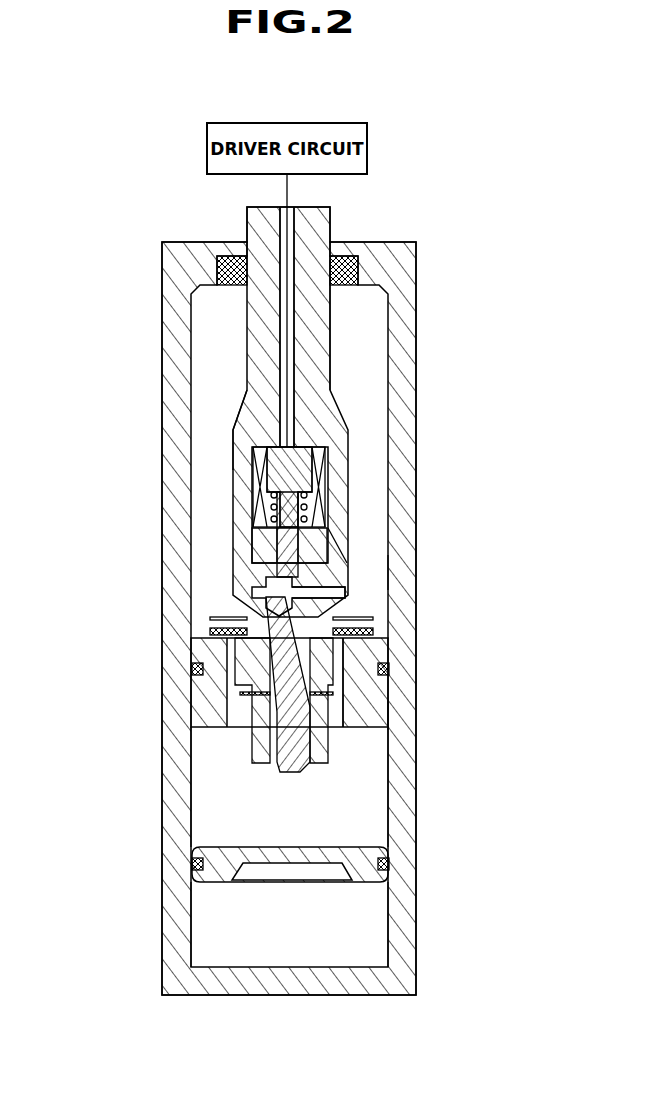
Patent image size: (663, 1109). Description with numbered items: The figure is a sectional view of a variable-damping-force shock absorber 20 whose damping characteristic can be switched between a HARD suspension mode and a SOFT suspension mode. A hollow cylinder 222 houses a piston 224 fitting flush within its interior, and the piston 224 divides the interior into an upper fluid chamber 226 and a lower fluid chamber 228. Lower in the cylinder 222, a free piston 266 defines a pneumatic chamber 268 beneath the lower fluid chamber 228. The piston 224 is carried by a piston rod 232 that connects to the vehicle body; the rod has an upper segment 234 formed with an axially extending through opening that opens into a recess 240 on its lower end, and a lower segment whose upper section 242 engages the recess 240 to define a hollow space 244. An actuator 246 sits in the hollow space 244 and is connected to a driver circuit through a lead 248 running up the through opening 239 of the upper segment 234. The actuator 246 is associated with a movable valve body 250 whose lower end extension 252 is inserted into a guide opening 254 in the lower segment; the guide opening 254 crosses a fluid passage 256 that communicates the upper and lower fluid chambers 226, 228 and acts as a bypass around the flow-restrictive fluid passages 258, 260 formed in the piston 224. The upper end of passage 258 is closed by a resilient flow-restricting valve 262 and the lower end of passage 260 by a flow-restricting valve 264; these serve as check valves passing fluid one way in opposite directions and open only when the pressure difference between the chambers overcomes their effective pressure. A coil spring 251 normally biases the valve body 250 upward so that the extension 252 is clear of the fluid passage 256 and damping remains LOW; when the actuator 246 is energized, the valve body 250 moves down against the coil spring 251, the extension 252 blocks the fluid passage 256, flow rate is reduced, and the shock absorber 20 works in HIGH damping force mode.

The shock absorber 20 is at (425, 525).
The housing 222 is at (410, 833).
The piston 224 is at (378, 716).
The upper fluid chamber 226 is at (377, 570).
The lower fluid chamber 228 is at (373, 792).
The piston rod 232 is at (357, 402).
The upper segment 234 is at (327, 363).
The lead wire 239 is at (285, 322).
The recess 240 is at (330, 552).
The upper section 242 is at (347, 578).
The hollow space 244 is at (255, 510).
The actuator 246 is at (243, 430).
The lead 248 is at (287, 360).
The movable valve body 250 is at (238, 462).
The coil spring 251 is at (265, 495).
The lower end extension 252 is at (243, 550).
The guide opening 254 is at (265, 588).
The fluid passage 256 is at (258, 605).
The flow-restrictive fluid passage 258 is at (228, 652).
The flow-restrictive fluid passage 260 is at (345, 655).
The resilient flow-restricting valve 262 is at (210, 630).
The flow-restricting valve 264 is at (333, 692).
The free piston 266 is at (380, 883).
The pneumatic chamber 268 is at (373, 912).